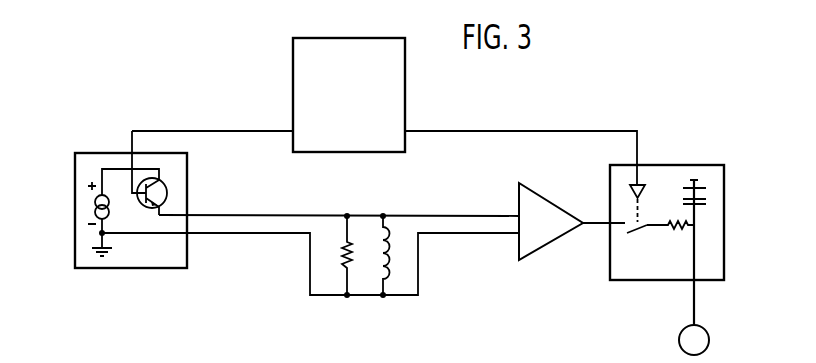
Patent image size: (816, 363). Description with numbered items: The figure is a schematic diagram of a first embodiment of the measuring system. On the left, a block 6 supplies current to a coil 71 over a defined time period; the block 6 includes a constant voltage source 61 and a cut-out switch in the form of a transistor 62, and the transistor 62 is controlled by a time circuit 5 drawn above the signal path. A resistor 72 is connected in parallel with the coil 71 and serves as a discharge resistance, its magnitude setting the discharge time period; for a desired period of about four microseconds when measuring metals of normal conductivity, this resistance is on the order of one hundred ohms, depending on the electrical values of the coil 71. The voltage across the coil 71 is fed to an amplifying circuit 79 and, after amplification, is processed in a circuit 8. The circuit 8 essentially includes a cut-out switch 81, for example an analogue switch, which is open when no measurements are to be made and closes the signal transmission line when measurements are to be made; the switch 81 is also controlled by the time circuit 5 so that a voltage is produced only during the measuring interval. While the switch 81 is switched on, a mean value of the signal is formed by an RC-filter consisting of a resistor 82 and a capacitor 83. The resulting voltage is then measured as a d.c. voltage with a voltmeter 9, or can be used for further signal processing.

The time circuit 5 is at (293, 61).
The block 6 is at (147, 269).
The constant voltage source 61 is at (88, 210).
The transistor 62 is at (167, 190).
The coil 71 is at (396, 262).
The resistor 72 is at (340, 258).
The amplifying circuit 79 is at (553, 190).
The circuit 8 is at (612, 249).
The cut-out switch 81 is at (646, 212).
The resistor 82 is at (673, 236).
The capacitor 83 is at (706, 212).
The voltmeter 9 is at (678, 341).